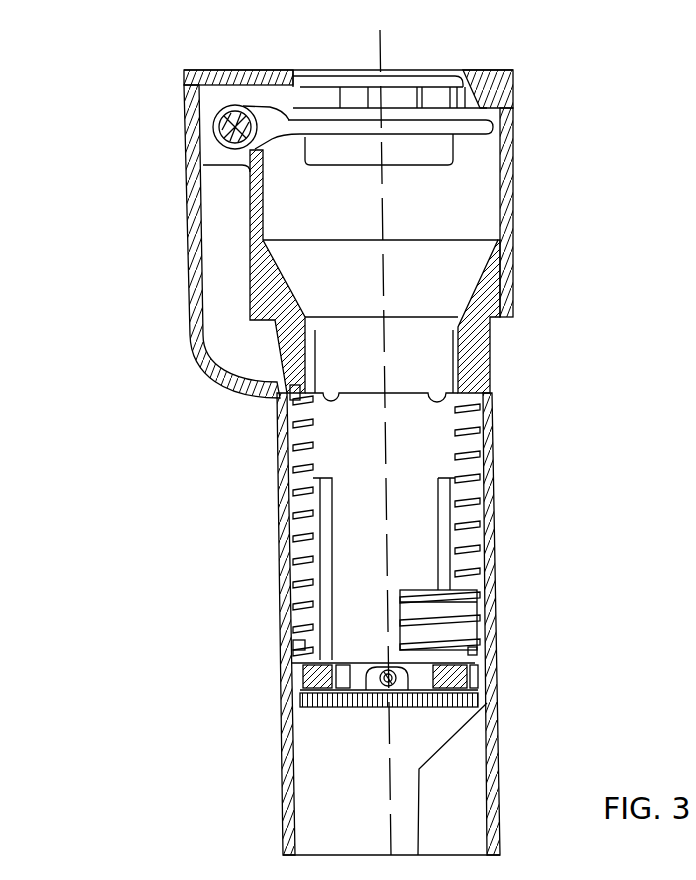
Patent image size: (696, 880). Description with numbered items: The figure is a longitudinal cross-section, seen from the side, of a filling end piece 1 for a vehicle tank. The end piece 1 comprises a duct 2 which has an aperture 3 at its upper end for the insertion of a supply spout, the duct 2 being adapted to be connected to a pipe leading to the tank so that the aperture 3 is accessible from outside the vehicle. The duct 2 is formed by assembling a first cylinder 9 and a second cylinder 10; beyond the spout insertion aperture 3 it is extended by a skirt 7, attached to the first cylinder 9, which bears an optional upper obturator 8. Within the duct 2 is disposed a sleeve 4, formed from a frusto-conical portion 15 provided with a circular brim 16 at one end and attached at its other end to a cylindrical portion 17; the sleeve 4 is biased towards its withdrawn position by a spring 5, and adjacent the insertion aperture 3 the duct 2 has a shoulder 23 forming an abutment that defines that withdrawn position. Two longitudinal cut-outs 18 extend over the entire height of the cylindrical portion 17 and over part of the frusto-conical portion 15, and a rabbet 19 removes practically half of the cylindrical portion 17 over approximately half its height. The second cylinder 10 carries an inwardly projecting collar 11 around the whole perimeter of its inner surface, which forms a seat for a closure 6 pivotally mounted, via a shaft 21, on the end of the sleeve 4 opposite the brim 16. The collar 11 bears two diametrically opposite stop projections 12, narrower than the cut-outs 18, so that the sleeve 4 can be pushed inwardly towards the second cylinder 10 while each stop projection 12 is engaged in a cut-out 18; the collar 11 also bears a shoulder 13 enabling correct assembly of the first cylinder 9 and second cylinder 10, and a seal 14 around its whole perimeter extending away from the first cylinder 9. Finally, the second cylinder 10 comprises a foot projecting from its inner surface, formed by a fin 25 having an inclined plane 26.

The filling end piece 1 is at (138, 561).
The duct 2 is at (505, 569).
The aperture 3 is at (431, 262).
The sleeve 4 is at (320, 571).
The spring 5 is at (480, 455).
The closure 6 is at (352, 707).
The skirt 7 is at (187, 210).
The upper obturator 8 is at (441, 76).
The first cylinder 9 is at (284, 441).
The second cylinder 10 is at (494, 750).
The collar 11 is at (300, 672).
The stop projections 12 is at (338, 665).
The shoulder 13 is at (300, 645).
The seal 14 is at (300, 688).
The frusto-conical portion 15 is at (481, 420).
The circular brim 16 is at (293, 390).
The cylindrical portion 17 is at (300, 540).
The longitudinal cut-outs 18 is at (298, 490).
The rabbet 19 is at (428, 588).
The shaft 21 is at (381, 704).
The shoulder 23 is at (440, 393).
The fin 25 is at (475, 813).
The inclined plane 26 is at (420, 768).